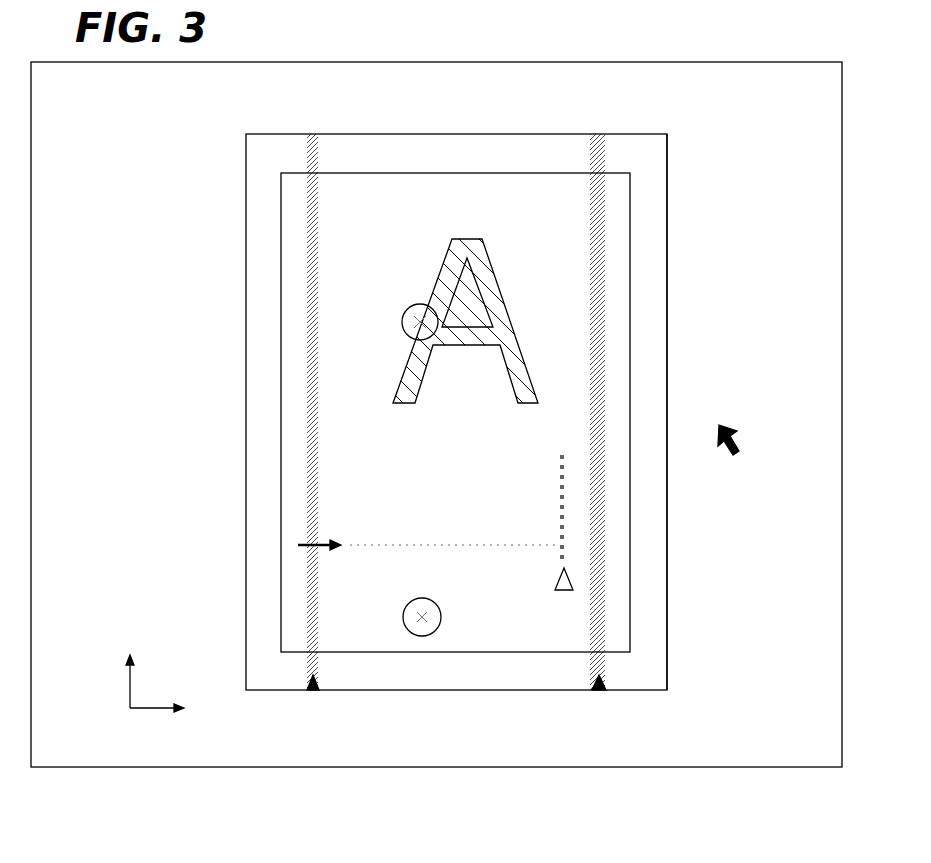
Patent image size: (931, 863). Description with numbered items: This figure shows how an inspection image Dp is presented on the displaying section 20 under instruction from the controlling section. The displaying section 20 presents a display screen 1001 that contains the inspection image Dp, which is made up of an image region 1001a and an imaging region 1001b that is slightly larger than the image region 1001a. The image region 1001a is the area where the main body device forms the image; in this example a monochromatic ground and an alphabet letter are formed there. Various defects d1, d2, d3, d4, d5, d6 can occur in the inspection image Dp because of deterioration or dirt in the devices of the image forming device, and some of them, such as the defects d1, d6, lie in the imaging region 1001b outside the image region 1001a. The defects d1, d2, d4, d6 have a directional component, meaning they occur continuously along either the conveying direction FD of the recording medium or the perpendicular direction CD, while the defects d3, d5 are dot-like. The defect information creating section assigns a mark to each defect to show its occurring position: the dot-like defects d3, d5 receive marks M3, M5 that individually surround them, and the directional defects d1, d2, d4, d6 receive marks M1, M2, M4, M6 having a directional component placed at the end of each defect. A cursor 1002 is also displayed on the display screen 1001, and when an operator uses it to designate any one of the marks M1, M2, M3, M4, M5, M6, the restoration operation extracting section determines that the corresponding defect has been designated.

The displaying section 20 is at (462, 62).
The inspection image Dp is at (226, 131).
The display screen 1001 is at (617, 133).
The image region 1001a is at (630, 222).
The imaging region 1001b is at (667, 258).
The cursor 1002 is at (736, 432).
The mark M1 is at (604, 686).
The mark M2 is at (568, 573).
The mark M3 is at (418, 636).
The mark M4 is at (308, 530).
The mark M5 is at (412, 335).
The mark M6 is at (309, 688).
The defect d1 is at (600, 628).
The defect d2 is at (568, 530).
The defect d3 is at (432, 630).
The defect d4 is at (372, 545).
The defect d5 is at (402, 320).
The defect d6 is at (312, 650).
The conveying direction FD is at (101, 681).
The perpendicular direction CD is at (159, 724).